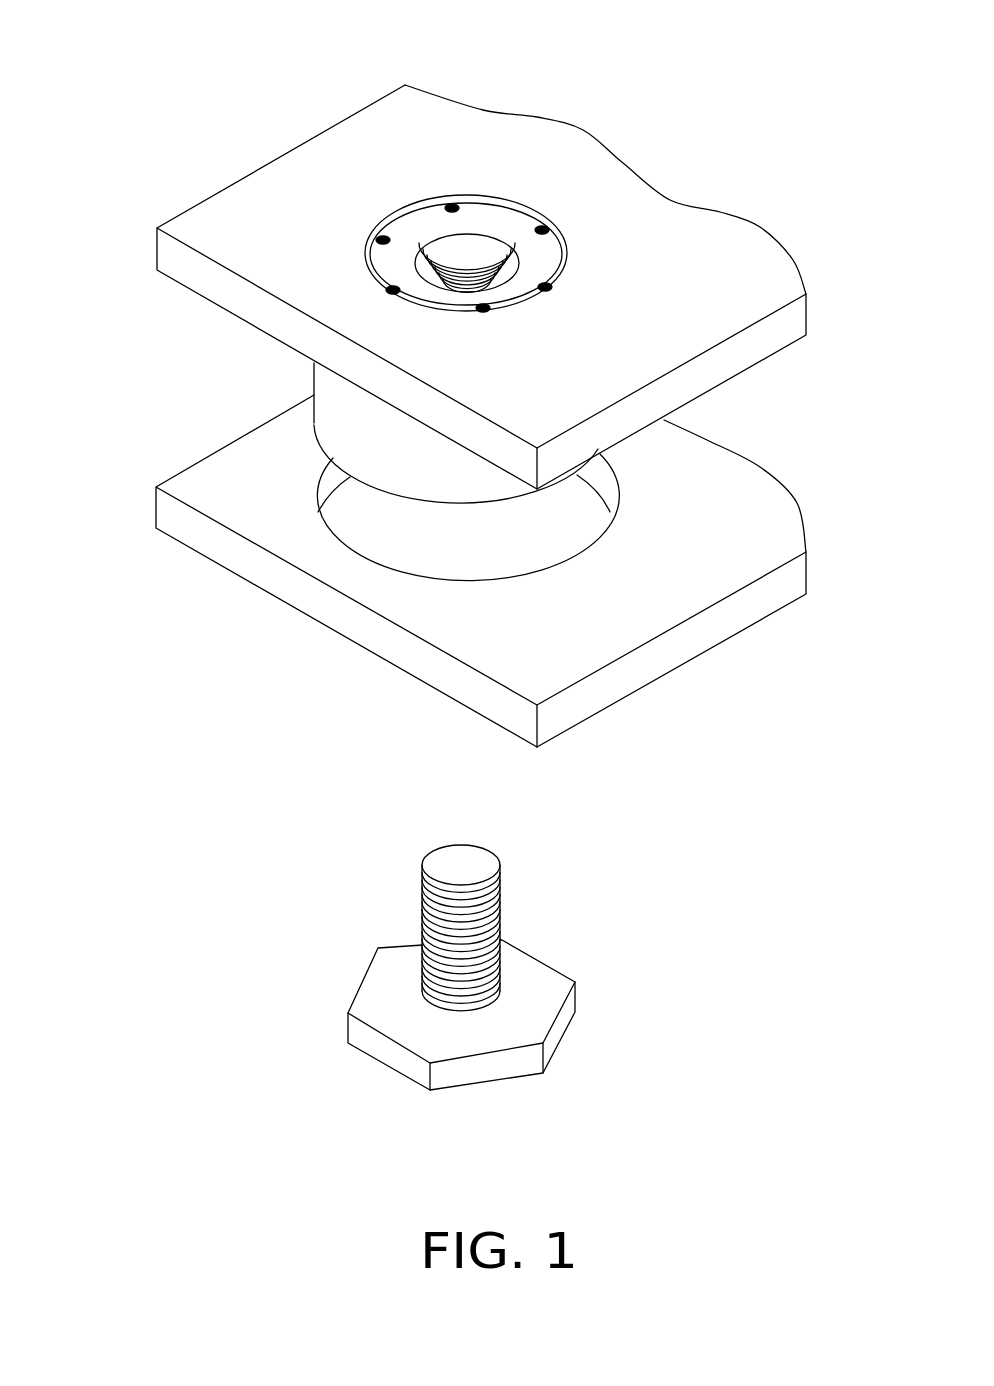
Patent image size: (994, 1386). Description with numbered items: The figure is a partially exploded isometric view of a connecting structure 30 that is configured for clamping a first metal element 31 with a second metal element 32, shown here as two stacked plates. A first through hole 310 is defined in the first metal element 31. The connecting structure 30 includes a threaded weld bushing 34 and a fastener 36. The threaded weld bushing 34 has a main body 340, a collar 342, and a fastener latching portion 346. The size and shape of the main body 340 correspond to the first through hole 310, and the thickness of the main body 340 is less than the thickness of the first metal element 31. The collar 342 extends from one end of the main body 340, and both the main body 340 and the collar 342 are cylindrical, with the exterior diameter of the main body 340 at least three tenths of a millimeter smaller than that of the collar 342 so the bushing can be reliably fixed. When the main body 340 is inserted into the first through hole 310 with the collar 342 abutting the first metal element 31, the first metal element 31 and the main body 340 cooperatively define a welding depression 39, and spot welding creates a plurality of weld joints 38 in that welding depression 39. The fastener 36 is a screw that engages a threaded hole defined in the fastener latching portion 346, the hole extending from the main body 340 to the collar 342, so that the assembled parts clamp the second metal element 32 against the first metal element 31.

The connecting structure 30 is at (122, 753).
The first metal element 31 is at (288, 195).
The first through hole 310 is at (398, 217).
The second metal element 32 is at (737, 573).
The threaded weld bushing 34 is at (190, 655).
The main body 340 is at (385, 260).
The collar 342 is at (468, 277).
The fastener latching portion 346 is at (468, 482).
The fastener 36 is at (380, 983).
The weld joints 38 is at (545, 230).
The welding depression 39 is at (490, 205).